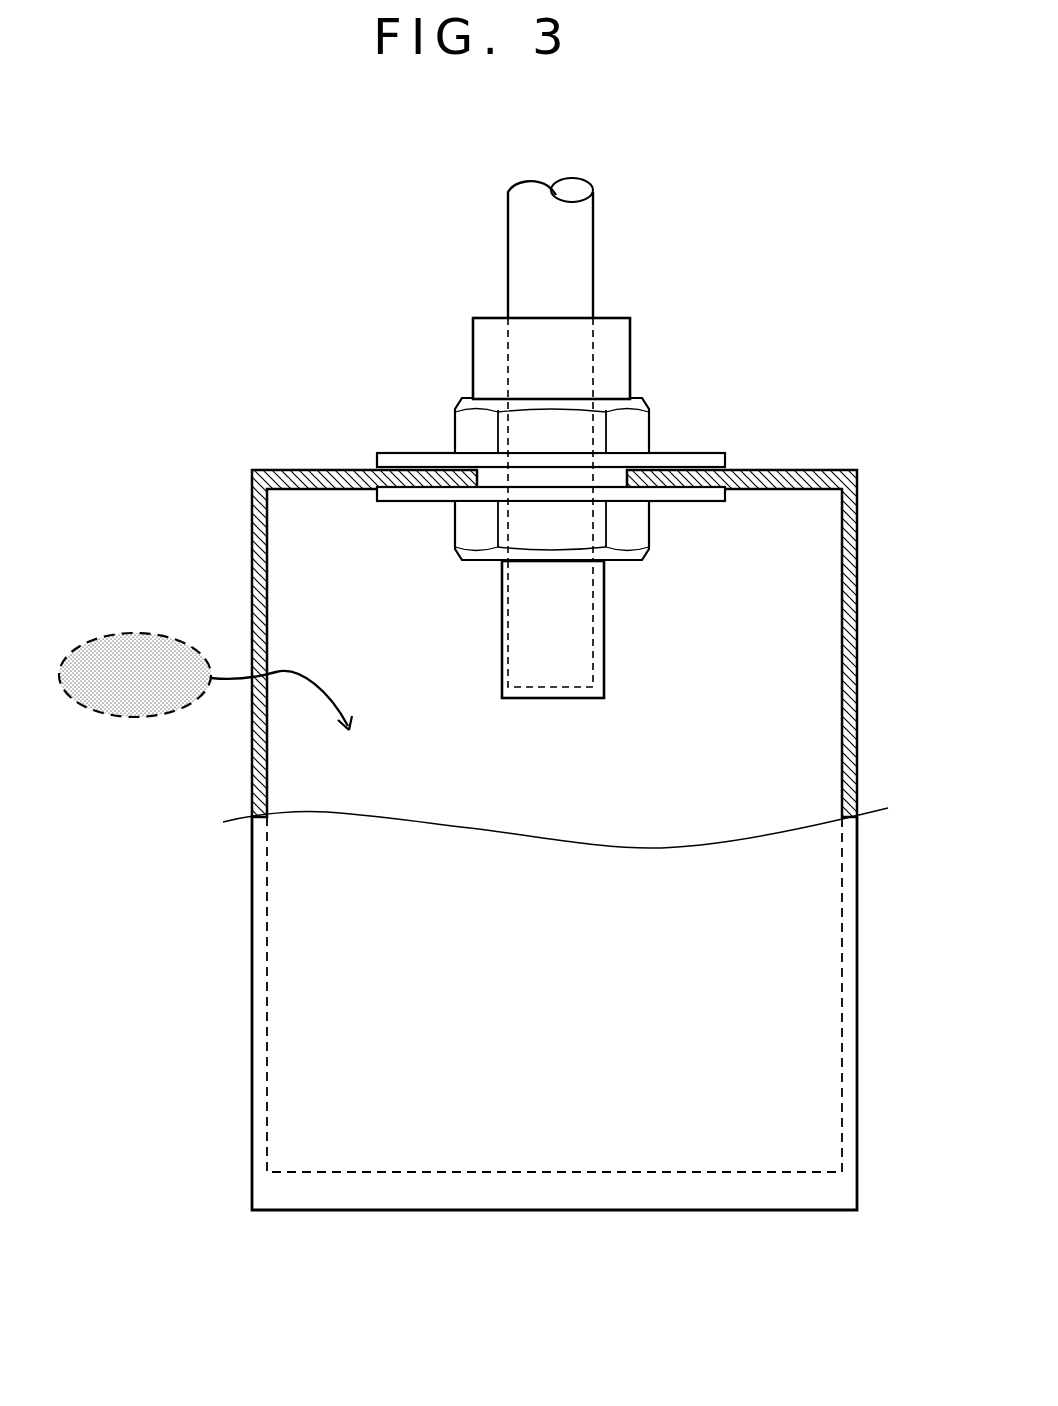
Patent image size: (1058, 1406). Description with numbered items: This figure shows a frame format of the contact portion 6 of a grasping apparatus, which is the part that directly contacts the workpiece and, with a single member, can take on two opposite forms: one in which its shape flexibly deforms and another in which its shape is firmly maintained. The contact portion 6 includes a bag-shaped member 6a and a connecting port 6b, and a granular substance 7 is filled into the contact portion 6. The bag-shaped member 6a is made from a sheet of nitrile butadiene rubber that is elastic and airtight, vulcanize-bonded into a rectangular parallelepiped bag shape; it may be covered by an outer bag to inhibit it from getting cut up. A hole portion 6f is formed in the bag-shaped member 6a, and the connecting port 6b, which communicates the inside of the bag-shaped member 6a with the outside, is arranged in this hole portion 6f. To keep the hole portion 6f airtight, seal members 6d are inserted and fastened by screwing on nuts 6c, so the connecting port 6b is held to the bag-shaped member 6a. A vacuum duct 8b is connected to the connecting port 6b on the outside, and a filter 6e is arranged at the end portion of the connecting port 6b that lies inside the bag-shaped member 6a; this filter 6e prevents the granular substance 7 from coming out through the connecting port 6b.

The contact portion 6 is at (236, 372).
The bag-shaped member 6a is at (252, 978).
The connecting port 6b is at (630, 356).
The nuts 6c is at (455, 524).
The seal members 6d is at (700, 452).
The filter 6e is at (604, 633).
The hole portion 6f is at (477, 476).
The granular substance 7 is at (136, 628).
The vacuum duct 8b is at (508, 250).